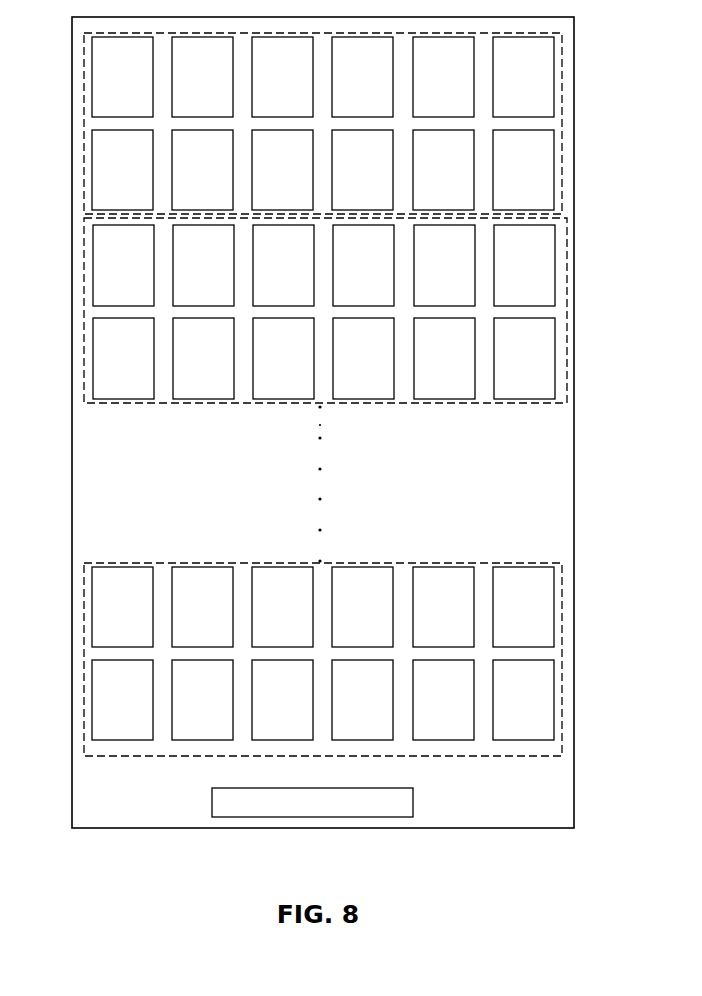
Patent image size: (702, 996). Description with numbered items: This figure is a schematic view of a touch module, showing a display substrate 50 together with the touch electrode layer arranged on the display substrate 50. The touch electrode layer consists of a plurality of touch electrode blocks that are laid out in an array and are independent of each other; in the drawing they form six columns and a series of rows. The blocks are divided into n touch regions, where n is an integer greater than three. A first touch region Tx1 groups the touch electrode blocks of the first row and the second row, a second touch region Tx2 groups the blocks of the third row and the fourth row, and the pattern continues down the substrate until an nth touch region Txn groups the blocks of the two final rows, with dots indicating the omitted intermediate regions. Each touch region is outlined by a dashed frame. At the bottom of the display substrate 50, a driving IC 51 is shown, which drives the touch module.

The display substrate 50 is at (72, 232).
The driving IC 51 is at (383, 817).
The first touch region Tx1 is at (562, 123).
The second touch region Tx2 is at (568, 303).
The nth touch region Txn is at (563, 662).